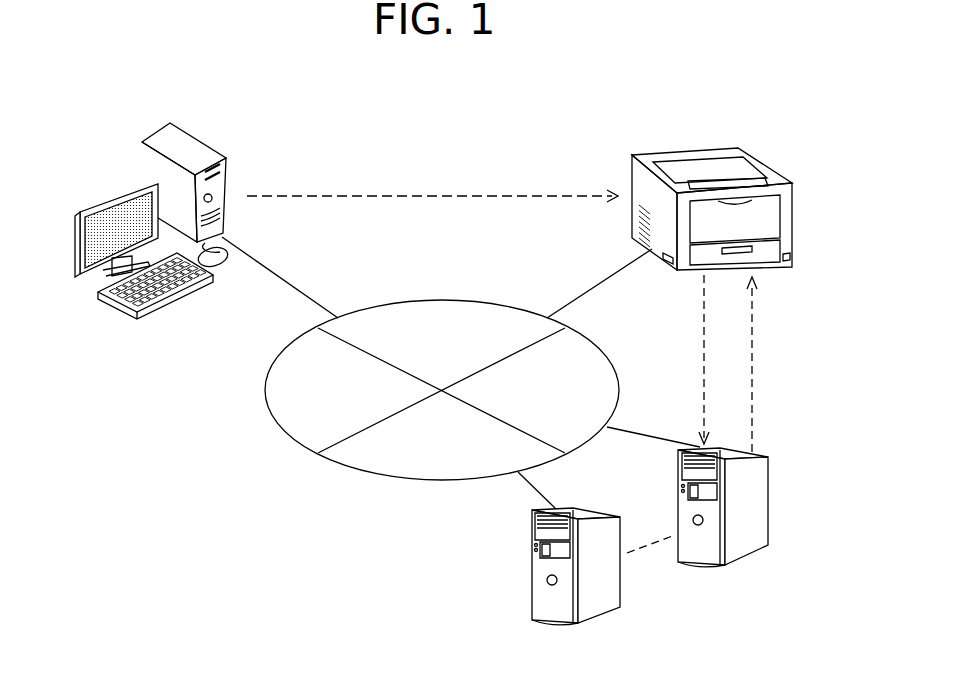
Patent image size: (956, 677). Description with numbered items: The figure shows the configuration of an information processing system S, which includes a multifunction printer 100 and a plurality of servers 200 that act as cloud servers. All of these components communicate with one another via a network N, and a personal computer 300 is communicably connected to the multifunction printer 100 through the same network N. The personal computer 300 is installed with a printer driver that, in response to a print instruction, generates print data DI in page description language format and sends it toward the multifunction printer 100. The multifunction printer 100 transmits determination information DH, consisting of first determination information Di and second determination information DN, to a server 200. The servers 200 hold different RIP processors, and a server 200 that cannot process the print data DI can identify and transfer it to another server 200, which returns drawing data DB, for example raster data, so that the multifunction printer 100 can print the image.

The multifunction printer 100 is at (737, 147).
The server 200 is at (607, 610).
The personal computer 300 is at (193, 134).
The network N is at (467, 302).
The information processing system S is at (607, 100).
The print data DI is at (432, 181).
The determination information DH is at (647, 359).
The drawing data DB is at (774, 364).